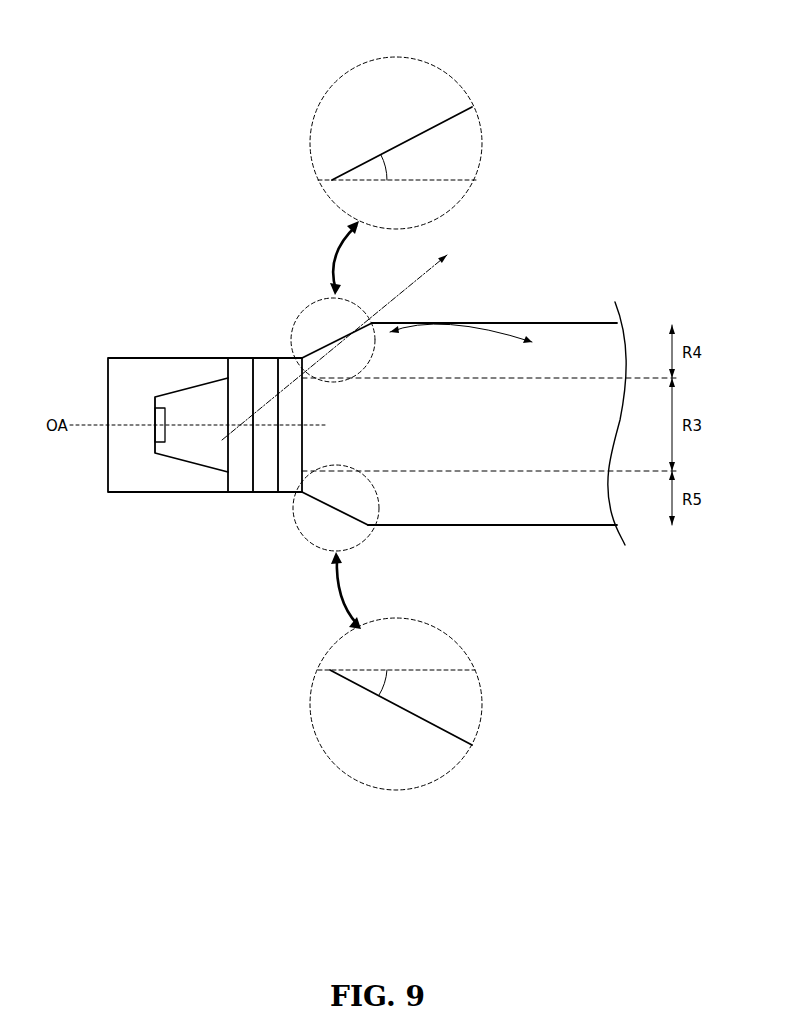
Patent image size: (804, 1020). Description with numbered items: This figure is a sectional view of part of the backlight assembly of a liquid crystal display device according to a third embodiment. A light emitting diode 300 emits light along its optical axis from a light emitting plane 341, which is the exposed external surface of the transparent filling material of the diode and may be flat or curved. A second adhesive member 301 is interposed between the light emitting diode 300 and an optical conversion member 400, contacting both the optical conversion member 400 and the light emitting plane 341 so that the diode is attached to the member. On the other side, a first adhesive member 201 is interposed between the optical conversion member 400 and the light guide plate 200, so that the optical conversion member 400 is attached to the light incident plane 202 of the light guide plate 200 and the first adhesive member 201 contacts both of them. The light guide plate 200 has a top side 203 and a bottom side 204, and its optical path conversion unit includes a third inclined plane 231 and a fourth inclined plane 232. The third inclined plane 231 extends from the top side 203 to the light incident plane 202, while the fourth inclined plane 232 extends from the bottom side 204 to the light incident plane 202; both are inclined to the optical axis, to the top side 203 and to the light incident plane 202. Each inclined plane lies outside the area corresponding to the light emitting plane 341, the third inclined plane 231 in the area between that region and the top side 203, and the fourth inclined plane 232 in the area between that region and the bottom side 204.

The light emitting diode 300 is at (140, 366).
The second adhesive member 301 is at (240, 494).
The optical conversion member 400 is at (263, 368).
The light emitting plane 341 is at (222, 440).
The light guide plate 200 is at (476, 426).
The first adhesive member 201 is at (290, 494).
The light incident plane 202 is at (330, 508).
The top side 203 is at (552, 323).
The bottom side 204 is at (560, 526).
The third inclined plane 231 is at (317, 352).
The fourth inclined plane 232 is at (347, 521).